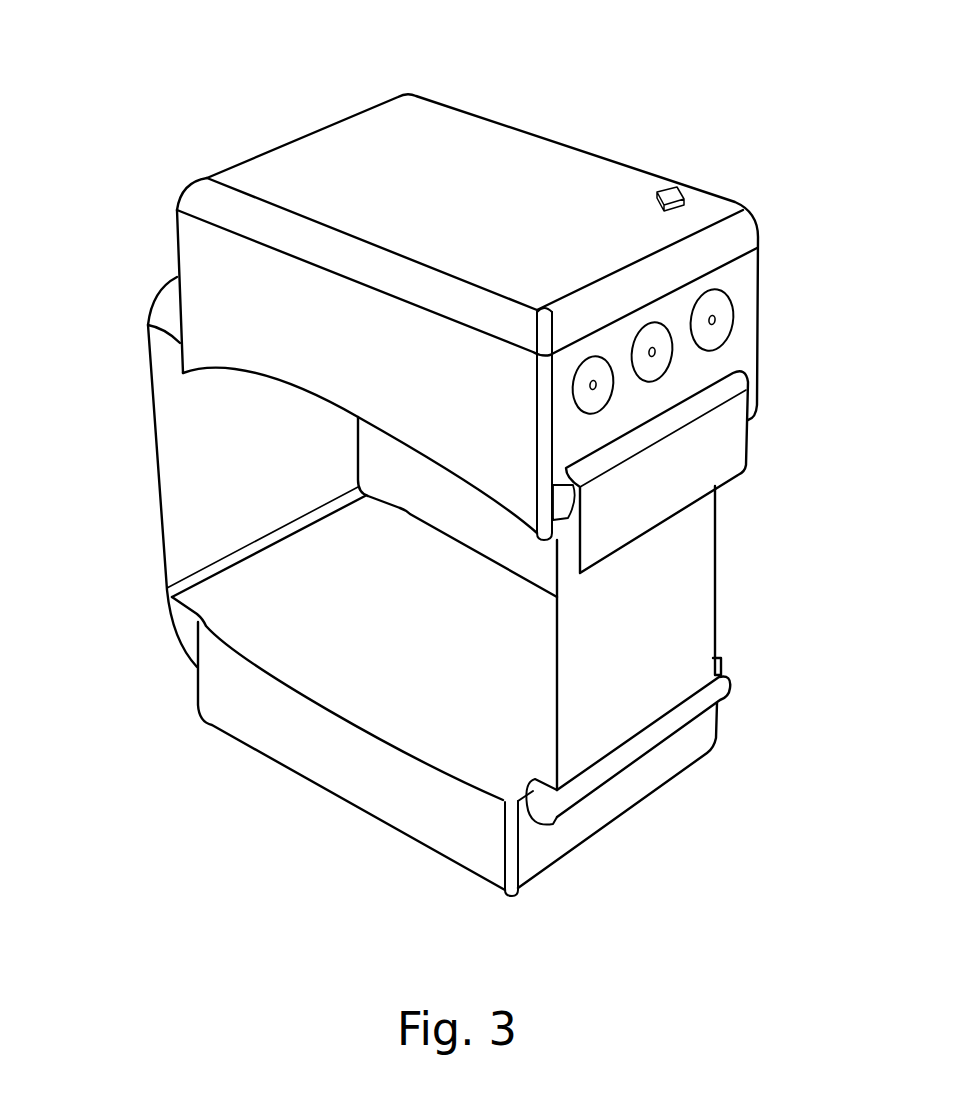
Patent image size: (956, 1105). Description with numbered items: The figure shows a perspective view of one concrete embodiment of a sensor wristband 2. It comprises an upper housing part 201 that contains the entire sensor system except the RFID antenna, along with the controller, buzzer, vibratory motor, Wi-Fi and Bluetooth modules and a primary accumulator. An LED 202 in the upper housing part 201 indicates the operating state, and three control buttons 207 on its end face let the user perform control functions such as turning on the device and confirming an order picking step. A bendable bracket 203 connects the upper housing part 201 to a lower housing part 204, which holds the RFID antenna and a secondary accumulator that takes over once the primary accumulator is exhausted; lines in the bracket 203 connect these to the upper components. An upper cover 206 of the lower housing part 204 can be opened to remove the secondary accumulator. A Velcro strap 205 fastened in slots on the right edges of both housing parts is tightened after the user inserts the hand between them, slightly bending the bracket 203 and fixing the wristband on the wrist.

The sensor wristband 2 is at (513, 80).
The upper housing part 201 is at (317, 133).
The LED 202 is at (674, 192).
The bendable bracket 203 is at (155, 454).
The lower housing part 204 is at (390, 802).
The Velcro strap 205 is at (717, 585).
The upper cover 206 is at (277, 667).
The control buttons 207 is at (713, 290).